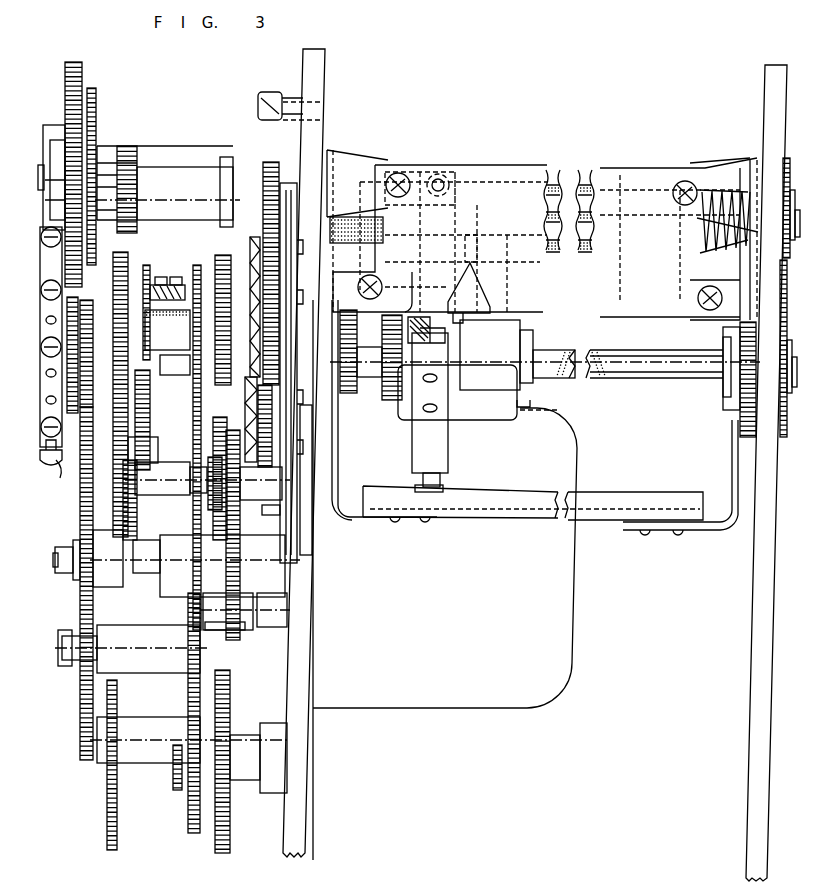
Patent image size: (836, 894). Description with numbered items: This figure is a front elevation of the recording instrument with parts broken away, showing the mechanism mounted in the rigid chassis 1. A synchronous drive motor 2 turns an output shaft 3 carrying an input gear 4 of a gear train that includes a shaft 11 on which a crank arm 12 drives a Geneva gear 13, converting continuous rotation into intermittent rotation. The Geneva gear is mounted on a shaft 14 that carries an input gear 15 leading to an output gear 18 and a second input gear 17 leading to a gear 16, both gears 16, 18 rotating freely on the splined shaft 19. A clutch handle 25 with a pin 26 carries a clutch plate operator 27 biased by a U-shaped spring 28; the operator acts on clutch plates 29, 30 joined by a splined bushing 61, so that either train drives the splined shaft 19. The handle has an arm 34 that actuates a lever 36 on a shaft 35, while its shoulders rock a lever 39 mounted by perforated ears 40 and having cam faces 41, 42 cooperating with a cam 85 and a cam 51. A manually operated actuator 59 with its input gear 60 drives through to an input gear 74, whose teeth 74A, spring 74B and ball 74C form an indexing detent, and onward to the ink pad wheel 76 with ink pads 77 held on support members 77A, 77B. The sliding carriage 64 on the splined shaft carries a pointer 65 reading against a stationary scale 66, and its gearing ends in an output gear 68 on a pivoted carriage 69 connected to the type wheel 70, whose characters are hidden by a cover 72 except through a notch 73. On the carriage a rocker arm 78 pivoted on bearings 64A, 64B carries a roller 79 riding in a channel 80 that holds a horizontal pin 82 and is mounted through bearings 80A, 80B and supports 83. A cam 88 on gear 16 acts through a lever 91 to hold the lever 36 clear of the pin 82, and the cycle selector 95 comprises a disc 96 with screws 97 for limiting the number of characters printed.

The chassis 1 is at (318, 79).
The drive motor 2 is at (458, 698).
The output shaft 3 is at (241, 630).
The input gear 4 is at (222, 630).
The shaft 11 is at (57, 645).
The crank arm 12 is at (86, 765).
The Geneva gear 13 is at (70, 586).
The shaft 14 is at (53, 558).
The input gear 15 is at (286, 573).
The gear 16 is at (125, 256).
The second input gear 17 is at (119, 499).
The output gear 18 is at (218, 256).
The splined shaft 19 is at (595, 350).
The clutch handle 25 is at (170, 322).
The pin 26 is at (160, 285).
The clutch plate operator 27 is at (172, 376).
The U-shaped spring 28 is at (170, 277).
The clutch plate 29 is at (145, 266).
The clutch plate 30 is at (195, 266).
The arm 34 is at (282, 312).
The shaft 35 is at (191, 200).
The lever 36 is at (288, 443).
The lever 39 is at (169, 158).
The perforated ears 40 is at (230, 240).
The cam face 41 is at (40, 375).
The cam face 42 is at (108, 515).
The cam 51 is at (158, 452).
The manually operated actuator 59 is at (76, 62).
The input gear 60 is at (92, 88).
The splined bushing 61 is at (150, 395).
The sliding carriage 64 is at (540, 322).
The bearing 64A is at (382, 340).
The bearing 64B is at (533, 380).
The pointer 65 is at (472, 282).
The stationary scale 66 is at (520, 165).
The output gear 68 is at (540, 265).
The pivoted carriage 69 is at (492, 423).
The type wheel 70 is at (470, 240).
The cover 72 is at (440, 350).
The notch 73 is at (412, 290).
The input gear 74 is at (327, 360).
The teeth 74A is at (345, 243).
The spring 74B is at (232, 245).
The ball 74C is at (243, 265).
The ink pad wheel 76 is at (445, 180).
The ink pads 77 is at (583, 175).
The support member 77A is at (327, 150).
The support member 77B is at (720, 216).
The rocker arm 78 is at (455, 208).
The roller 79 is at (445, 500).
The channel 80 is at (568, 520).
The bearing 80A is at (345, 390).
The bearing 80B is at (740, 420).
The horizontal pin 82 is at (278, 513).
The supports 83 is at (338, 513).
The cam 85 is at (86, 406).
The cam 88 is at (70, 420).
The lever 91 is at (62, 128).
The cycle selector 95 is at (54, 484).
The disc 96 is at (66, 475).
The screws 97 is at (42, 462).